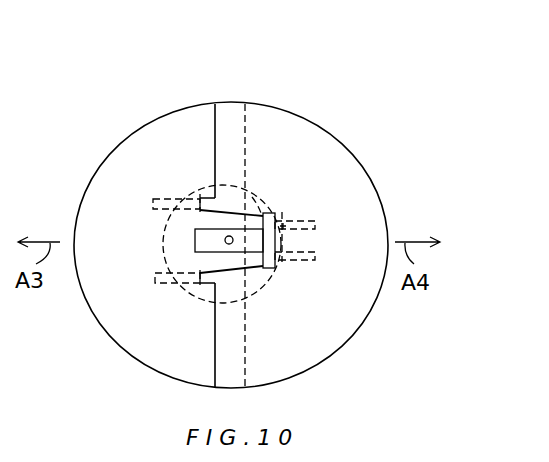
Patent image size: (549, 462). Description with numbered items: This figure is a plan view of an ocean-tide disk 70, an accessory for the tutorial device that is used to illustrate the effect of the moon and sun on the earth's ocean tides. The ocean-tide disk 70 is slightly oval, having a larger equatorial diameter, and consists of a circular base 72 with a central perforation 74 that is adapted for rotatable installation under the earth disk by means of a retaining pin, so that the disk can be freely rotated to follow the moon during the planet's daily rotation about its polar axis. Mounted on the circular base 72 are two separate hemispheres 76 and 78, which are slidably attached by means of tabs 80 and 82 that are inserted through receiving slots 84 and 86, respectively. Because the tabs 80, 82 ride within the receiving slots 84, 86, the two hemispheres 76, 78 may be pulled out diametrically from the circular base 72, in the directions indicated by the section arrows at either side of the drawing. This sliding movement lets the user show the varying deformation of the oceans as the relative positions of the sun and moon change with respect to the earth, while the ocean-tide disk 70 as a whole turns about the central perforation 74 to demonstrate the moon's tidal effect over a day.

The ocean-tide disk 70 is at (364, 135).
The circular base 72 is at (276, 272).
The central perforation 74 is at (226, 244).
The hemisphere 76 is at (133, 162).
The hemisphere 78 is at (372, 220).
The tab 80 is at (298, 218).
The tab 82 is at (205, 194).
The receiving slot 84 is at (255, 193).
The receiving slot 86 is at (198, 203).